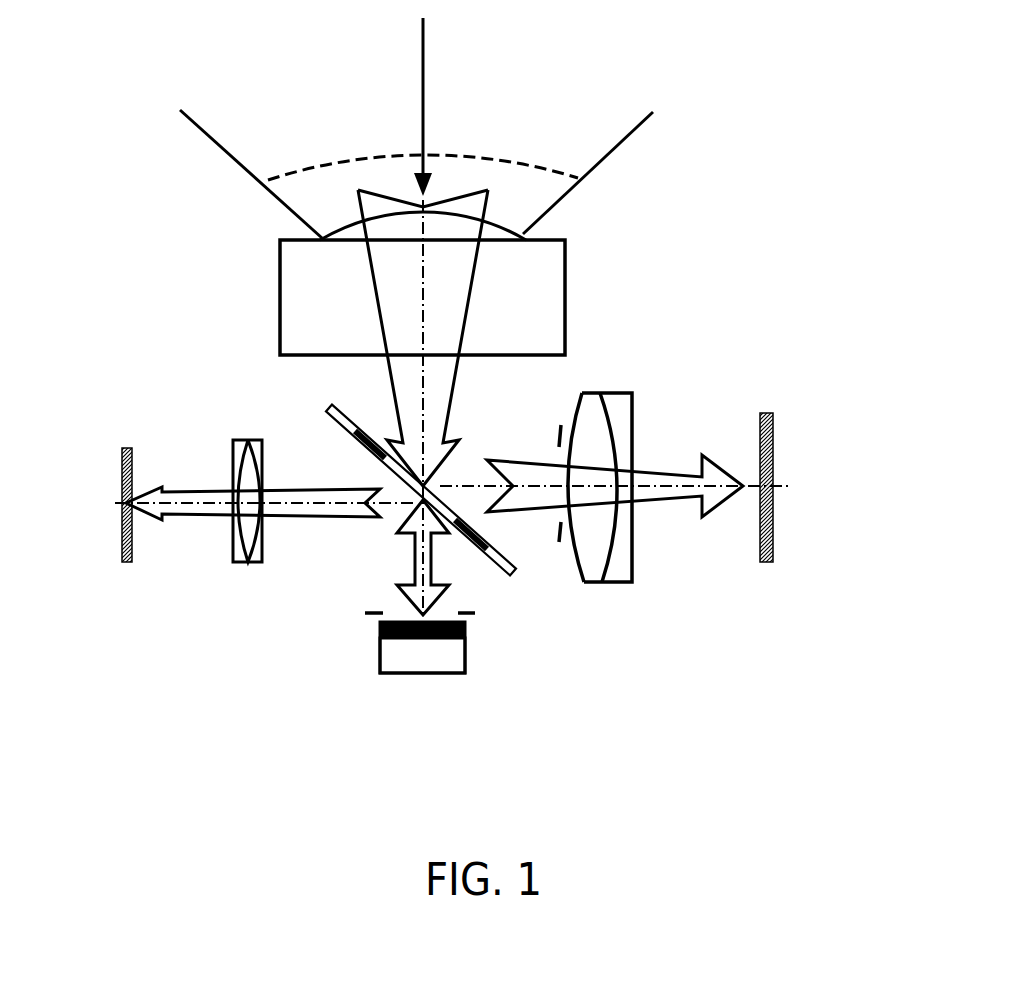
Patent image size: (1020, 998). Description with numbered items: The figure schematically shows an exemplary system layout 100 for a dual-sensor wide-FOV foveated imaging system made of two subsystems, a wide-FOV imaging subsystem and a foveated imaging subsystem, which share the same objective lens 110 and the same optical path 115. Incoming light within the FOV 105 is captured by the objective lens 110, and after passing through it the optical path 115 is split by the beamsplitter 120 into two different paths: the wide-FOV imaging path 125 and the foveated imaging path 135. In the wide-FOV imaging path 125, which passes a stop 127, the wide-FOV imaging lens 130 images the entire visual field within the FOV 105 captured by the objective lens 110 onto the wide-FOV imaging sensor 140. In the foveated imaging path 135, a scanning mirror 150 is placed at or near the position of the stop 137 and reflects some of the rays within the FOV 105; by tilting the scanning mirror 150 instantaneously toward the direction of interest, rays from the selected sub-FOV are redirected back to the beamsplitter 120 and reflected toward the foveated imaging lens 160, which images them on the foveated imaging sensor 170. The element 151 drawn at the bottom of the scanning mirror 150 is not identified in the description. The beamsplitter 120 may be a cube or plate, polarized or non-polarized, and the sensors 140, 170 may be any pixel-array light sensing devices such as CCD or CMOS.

The system layout 100 is at (670, 235).
The FOV 105 is at (498, 152).
The objective lens 110 is at (280, 298).
The optical path 115 is at (450, 302).
The beamsplitter 120 is at (322, 412).
The wide-FOV imaging path 125 is at (673, 500).
The stop 127 is at (558, 538).
The wide-FOV imaging lens 130 is at (617, 417).
The foveated imaging path 135 is at (190, 492).
The stop 137 is at (363, 622).
The imaging sensor 140 is at (770, 413).
The scanning mirror 150 is at (477, 643).
The detector element 151 is at (448, 677).
The foveated imaging lens 160 is at (245, 565).
The imaging sensor 170 is at (118, 562).